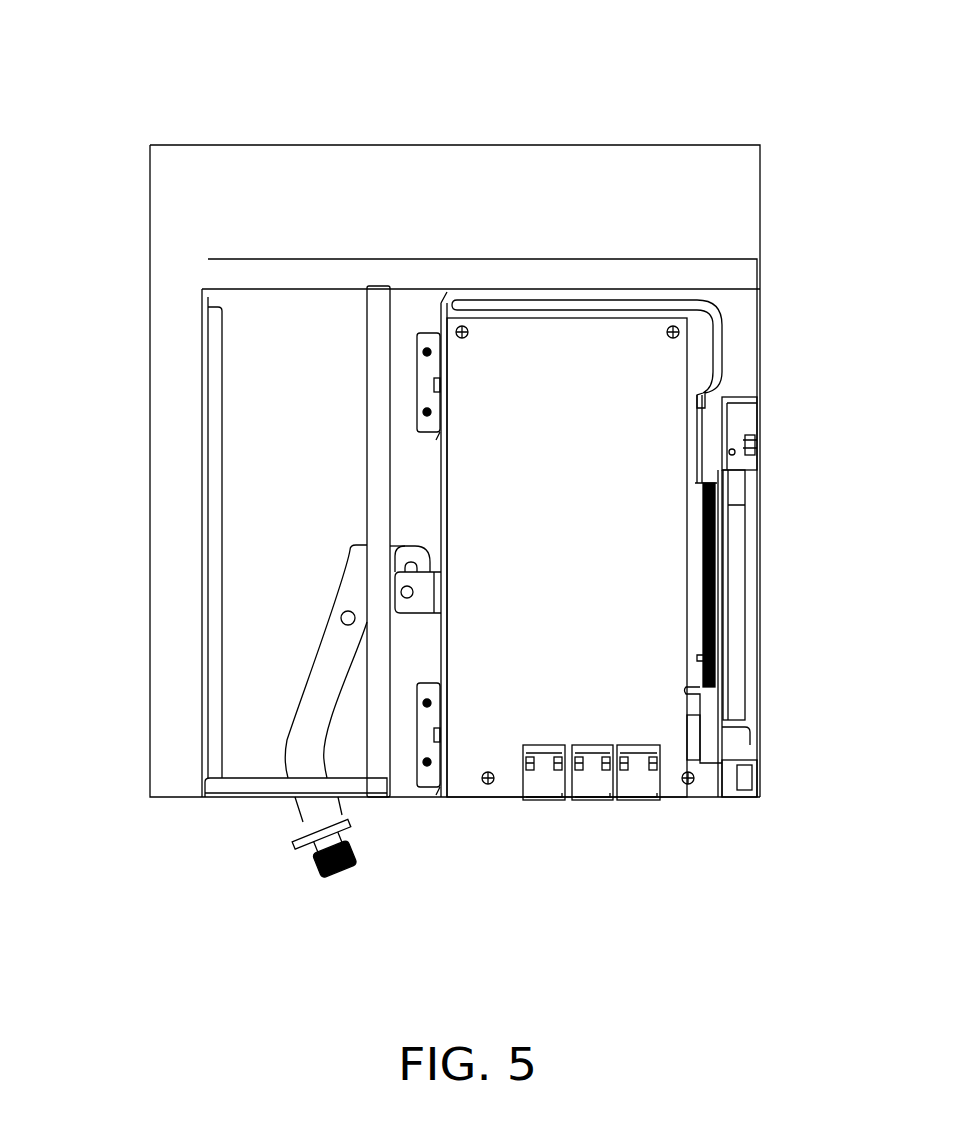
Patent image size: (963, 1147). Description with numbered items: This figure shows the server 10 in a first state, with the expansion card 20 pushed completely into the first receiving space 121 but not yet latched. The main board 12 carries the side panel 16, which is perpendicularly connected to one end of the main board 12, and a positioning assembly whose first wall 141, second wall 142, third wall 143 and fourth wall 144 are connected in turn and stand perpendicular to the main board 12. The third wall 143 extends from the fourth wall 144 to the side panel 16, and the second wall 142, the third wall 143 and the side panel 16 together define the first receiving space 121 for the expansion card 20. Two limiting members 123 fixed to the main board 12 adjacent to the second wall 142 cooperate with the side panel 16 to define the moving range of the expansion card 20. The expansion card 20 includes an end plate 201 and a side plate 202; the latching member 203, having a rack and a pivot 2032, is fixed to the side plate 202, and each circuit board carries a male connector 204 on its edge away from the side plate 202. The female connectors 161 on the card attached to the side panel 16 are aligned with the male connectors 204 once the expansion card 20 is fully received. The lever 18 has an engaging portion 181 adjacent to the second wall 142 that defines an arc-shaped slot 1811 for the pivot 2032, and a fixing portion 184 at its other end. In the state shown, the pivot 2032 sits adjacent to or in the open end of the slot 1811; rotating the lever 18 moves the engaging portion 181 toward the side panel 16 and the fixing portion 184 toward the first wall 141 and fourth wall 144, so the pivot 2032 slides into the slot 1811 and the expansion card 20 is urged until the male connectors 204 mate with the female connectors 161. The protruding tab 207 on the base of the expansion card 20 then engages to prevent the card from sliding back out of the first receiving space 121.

The server 10 is at (392, 58).
The main board 12 is at (176, 697).
The side panel 16 is at (762, 370).
The lever 18 is at (300, 760).
The expansion card 20 is at (510, 778).
The first receiving space 121 is at (708, 432).
The limiting members 123 is at (425, 772).
The first wall 141 is at (235, 785).
The second wall 142 is at (382, 767).
The third wall 143 is at (515, 275).
The fourth wall 144 is at (216, 742).
The female connectors 161 is at (737, 692).
The engaging portion 181 is at (427, 572).
The fixing portion 184 is at (297, 838).
The end plate 201 is at (670, 797).
The side plate 202 is at (447, 482).
The latching member 203 is at (408, 612).
The male connector 204 is at (718, 606).
The protruding tab 207 is at (708, 773).
The slot 1811 is at (408, 565).
The pivot 2032 is at (401, 592).